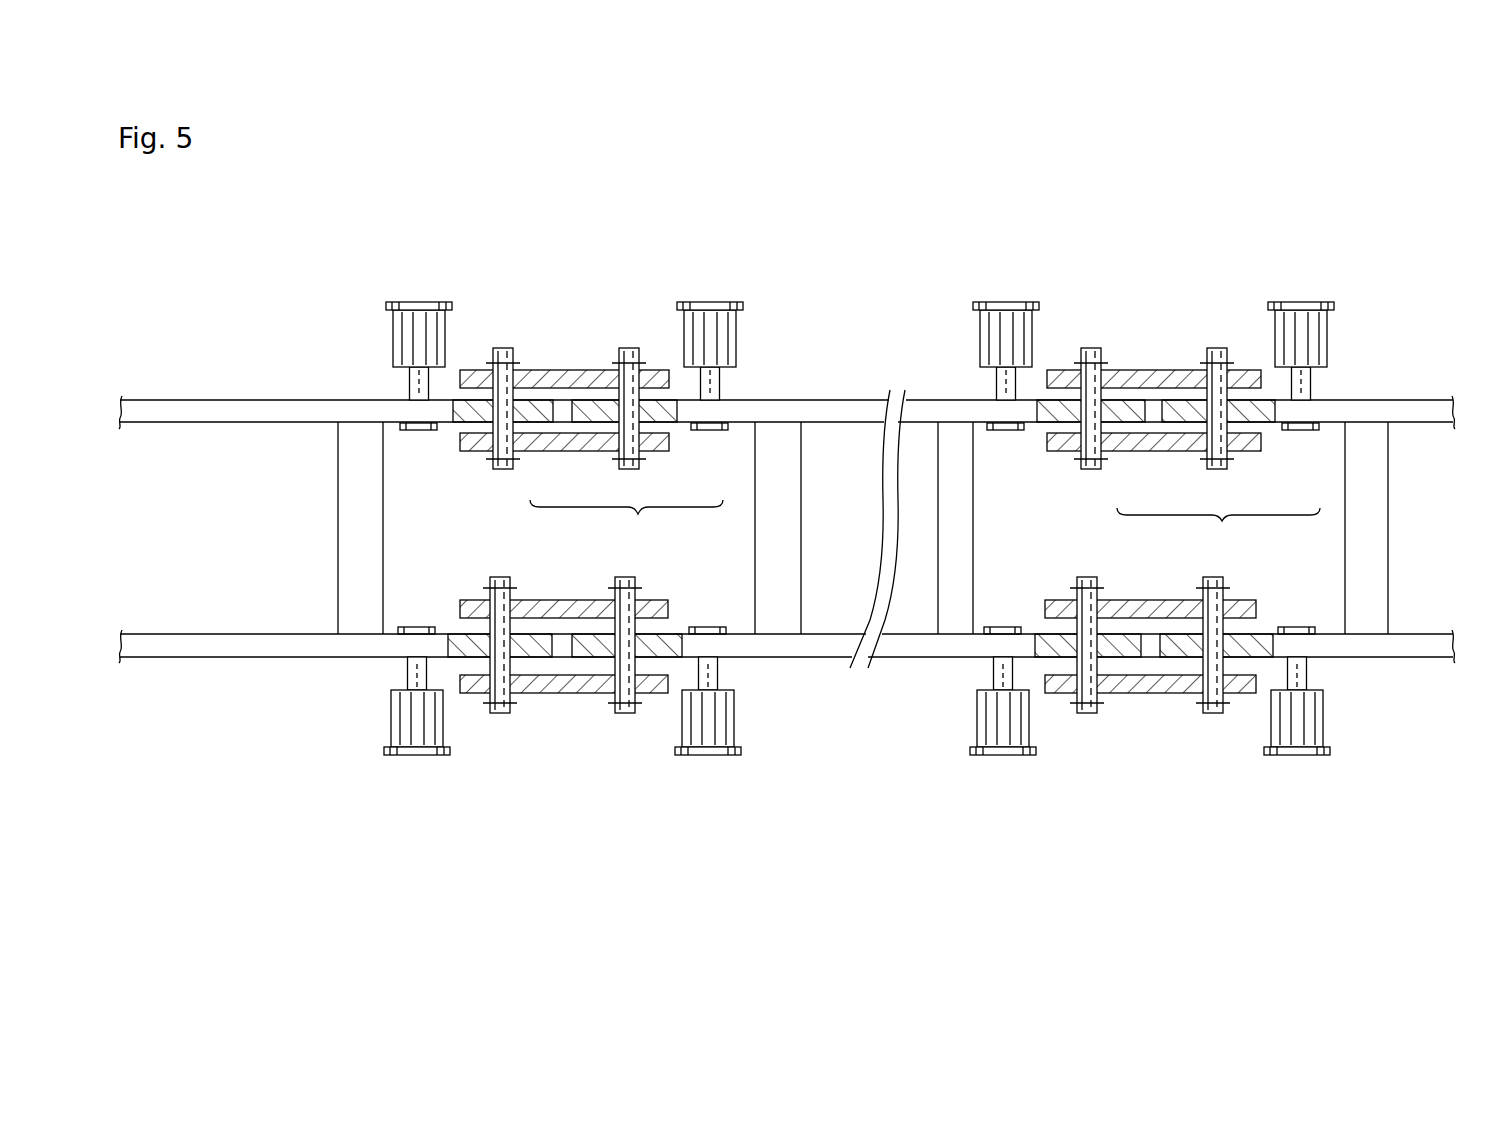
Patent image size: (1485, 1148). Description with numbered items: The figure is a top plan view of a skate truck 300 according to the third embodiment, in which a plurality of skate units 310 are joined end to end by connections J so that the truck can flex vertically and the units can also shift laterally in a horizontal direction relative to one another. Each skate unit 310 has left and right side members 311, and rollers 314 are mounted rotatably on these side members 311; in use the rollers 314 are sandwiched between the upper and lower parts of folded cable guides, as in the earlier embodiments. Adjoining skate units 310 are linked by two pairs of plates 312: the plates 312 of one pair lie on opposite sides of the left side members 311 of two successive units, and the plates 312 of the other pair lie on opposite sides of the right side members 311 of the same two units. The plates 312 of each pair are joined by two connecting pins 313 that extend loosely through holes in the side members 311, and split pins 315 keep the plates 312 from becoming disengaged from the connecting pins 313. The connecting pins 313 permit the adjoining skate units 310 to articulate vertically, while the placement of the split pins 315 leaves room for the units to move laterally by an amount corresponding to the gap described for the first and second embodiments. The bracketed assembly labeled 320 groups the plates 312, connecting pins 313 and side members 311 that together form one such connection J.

The skate truck 300 is at (525, 796).
The skate unit 310 is at (555, 242).
The side member 311 is at (687, 415).
The plate 312 is at (1145, 375).
The connecting pin 313 is at (492, 460).
The roller 314 is at (393, 335).
The split pin 315 is at (488, 588).
The rail joint 320 is at (667, 546).
The connection J is at (1237, 555).